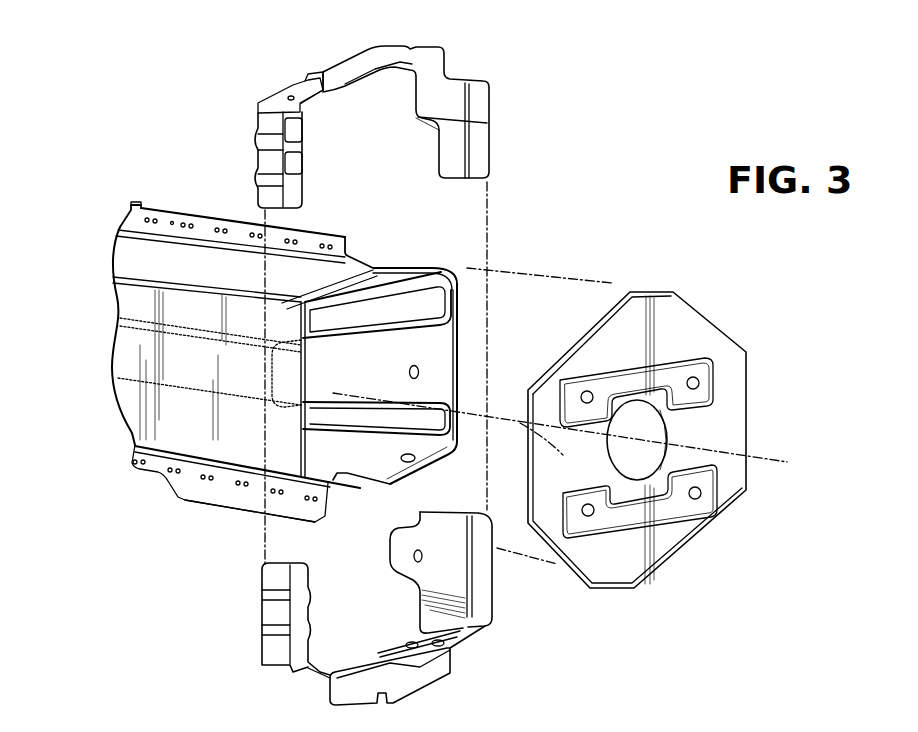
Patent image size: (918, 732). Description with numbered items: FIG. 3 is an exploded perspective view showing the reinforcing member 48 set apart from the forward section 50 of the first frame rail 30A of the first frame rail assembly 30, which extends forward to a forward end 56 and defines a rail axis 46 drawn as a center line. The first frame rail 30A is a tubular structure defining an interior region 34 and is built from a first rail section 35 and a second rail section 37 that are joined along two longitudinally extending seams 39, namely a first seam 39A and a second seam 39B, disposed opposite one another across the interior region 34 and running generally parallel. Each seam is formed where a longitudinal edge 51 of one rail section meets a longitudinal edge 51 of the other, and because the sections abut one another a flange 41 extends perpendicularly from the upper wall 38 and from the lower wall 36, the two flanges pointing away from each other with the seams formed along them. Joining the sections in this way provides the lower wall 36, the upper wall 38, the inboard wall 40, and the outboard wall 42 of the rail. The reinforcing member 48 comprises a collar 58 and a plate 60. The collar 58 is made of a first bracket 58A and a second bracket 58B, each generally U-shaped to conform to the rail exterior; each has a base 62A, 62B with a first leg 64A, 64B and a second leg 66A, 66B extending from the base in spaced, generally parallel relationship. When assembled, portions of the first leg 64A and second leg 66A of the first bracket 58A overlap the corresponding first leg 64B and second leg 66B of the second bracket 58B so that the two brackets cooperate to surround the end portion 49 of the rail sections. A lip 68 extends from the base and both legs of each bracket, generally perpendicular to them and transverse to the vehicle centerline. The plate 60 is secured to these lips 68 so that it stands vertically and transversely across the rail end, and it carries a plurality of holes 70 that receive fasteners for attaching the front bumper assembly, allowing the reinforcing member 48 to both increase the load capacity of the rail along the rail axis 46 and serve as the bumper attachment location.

The first frame rail assembly 30 is at (135, 407).
The first frame rail 30A is at (142, 262).
The interior region 34 is at (414, 383).
The first rail section 35 is at (183, 307).
The lower wall 36 is at (362, 460).
The second rail section 37 is at (437, 340).
The upper wall 38 is at (200, 263).
The longitudinally extending seam 39 is at (162, 220).
The first seam 39A is at (173, 221).
The second seam 39B is at (290, 507).
The inboard wall 40 is at (168, 440).
The flange 41 is at (133, 210).
The outboard wall 42 is at (433, 362).
The rail axis 46 is at (549, 449).
The reinforcing member 48 is at (252, 125).
The end portion 49 is at (290, 370).
The forward section 50 is at (123, 192).
The longitudinal edge 51 is at (313, 225).
The forward end 56 is at (295, 447).
The collar 58 is at (478, 81).
The first bracket 58A is at (385, 60).
The second bracket 58B is at (397, 687).
The plate 60 is at (702, 325).
The base of first bracket 62A is at (313, 82).
The base of second bracket 62B is at (347, 677).
The first leg of first bracket 64A is at (270, 163).
The first leg of second bracket 64B is at (273, 610).
The second leg of first bracket 66A is at (458, 162).
The second leg of second bracket 66B is at (453, 600).
The lip 68 is at (440, 60).
The holes 70 is at (693, 384).